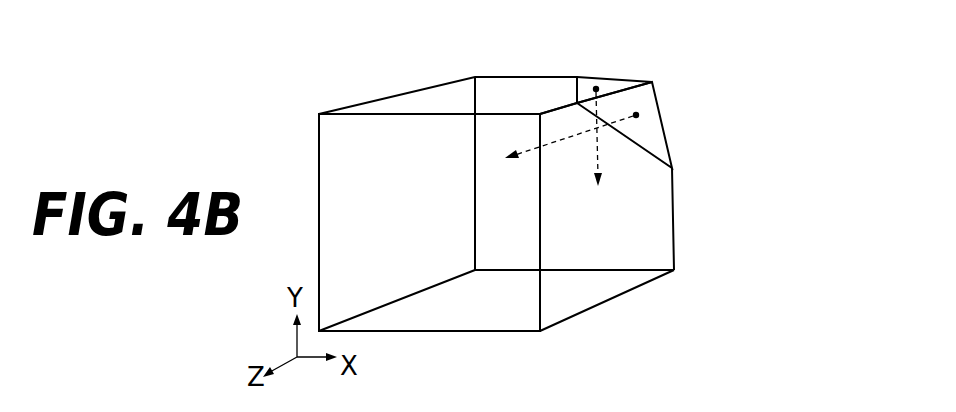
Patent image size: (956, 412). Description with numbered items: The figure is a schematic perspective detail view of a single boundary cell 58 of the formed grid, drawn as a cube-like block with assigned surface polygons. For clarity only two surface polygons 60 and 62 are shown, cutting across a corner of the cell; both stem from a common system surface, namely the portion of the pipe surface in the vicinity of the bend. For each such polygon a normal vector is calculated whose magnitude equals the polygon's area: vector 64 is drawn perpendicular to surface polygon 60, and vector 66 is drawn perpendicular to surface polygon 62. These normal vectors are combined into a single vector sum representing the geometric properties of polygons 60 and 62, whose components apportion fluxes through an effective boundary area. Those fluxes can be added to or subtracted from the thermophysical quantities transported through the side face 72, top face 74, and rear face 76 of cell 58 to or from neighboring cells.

The cell 58 is at (319, 114).
The top face 74 is at (542, 85).
The surface polygon 62 is at (620, 82).
The surface polygon 60 is at (652, 128).
The side face 72 is at (648, 240).
The vector 66 is at (607, 165).
The rear face 76 is at (710, 184).
The vector 64 is at (553, 143).